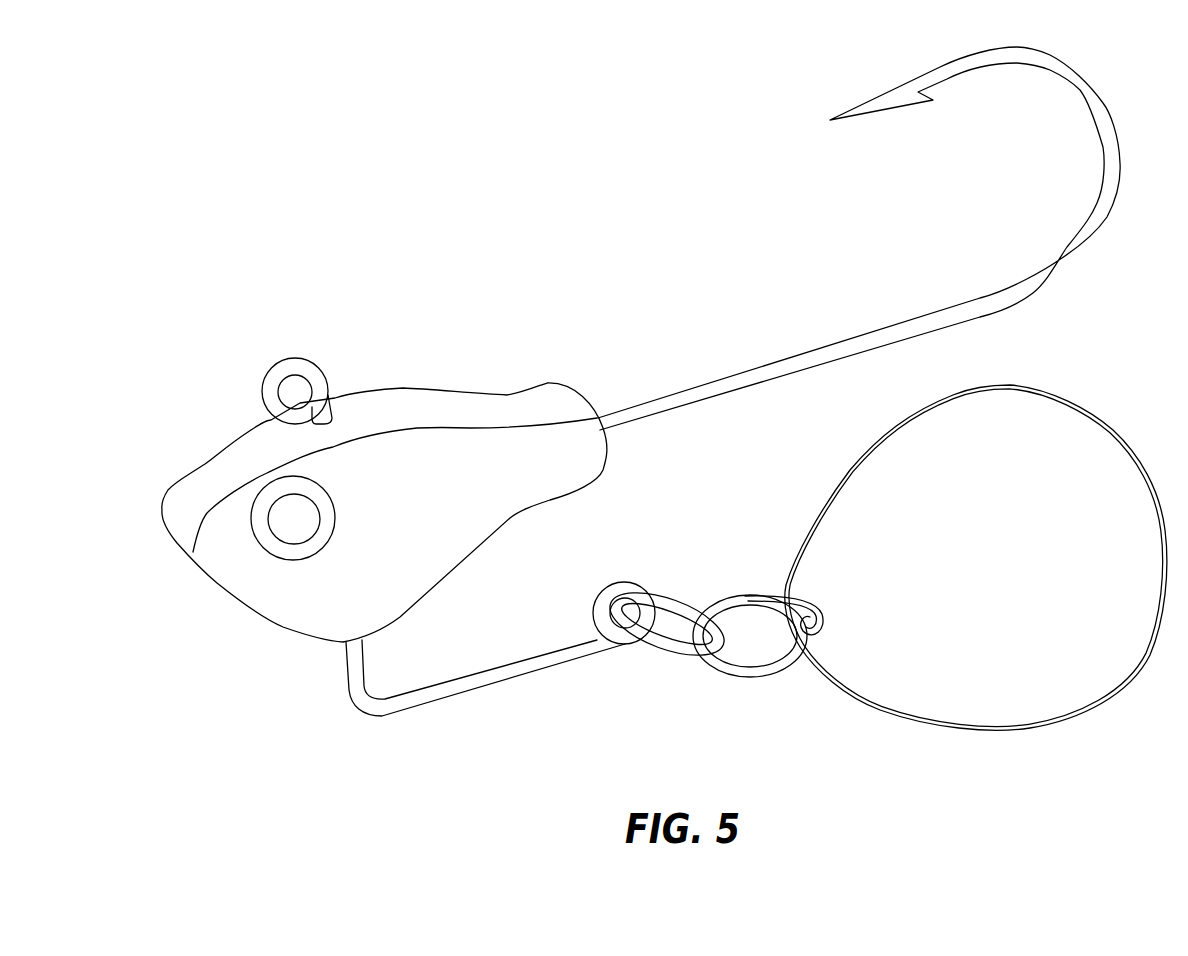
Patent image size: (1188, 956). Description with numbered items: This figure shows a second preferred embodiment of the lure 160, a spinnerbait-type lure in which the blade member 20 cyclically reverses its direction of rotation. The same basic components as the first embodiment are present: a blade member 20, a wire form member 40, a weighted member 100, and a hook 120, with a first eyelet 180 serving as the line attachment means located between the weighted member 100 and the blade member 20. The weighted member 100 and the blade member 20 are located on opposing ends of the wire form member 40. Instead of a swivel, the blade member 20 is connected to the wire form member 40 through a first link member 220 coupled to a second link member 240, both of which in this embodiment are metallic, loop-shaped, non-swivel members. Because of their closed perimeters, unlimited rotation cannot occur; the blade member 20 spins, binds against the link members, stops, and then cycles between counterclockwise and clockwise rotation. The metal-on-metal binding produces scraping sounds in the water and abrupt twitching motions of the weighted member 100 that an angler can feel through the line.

The lure 160 is at (560, 114).
The weighted member 100 is at (502, 412).
The first eyelet 180 is at (297, 392).
The hook 120 is at (840, 345).
The wire form member 40 is at (503, 660).
The first link member 220 is at (667, 642).
The second link member 240 is at (735, 597).
The blade member 20 is at (1097, 437).